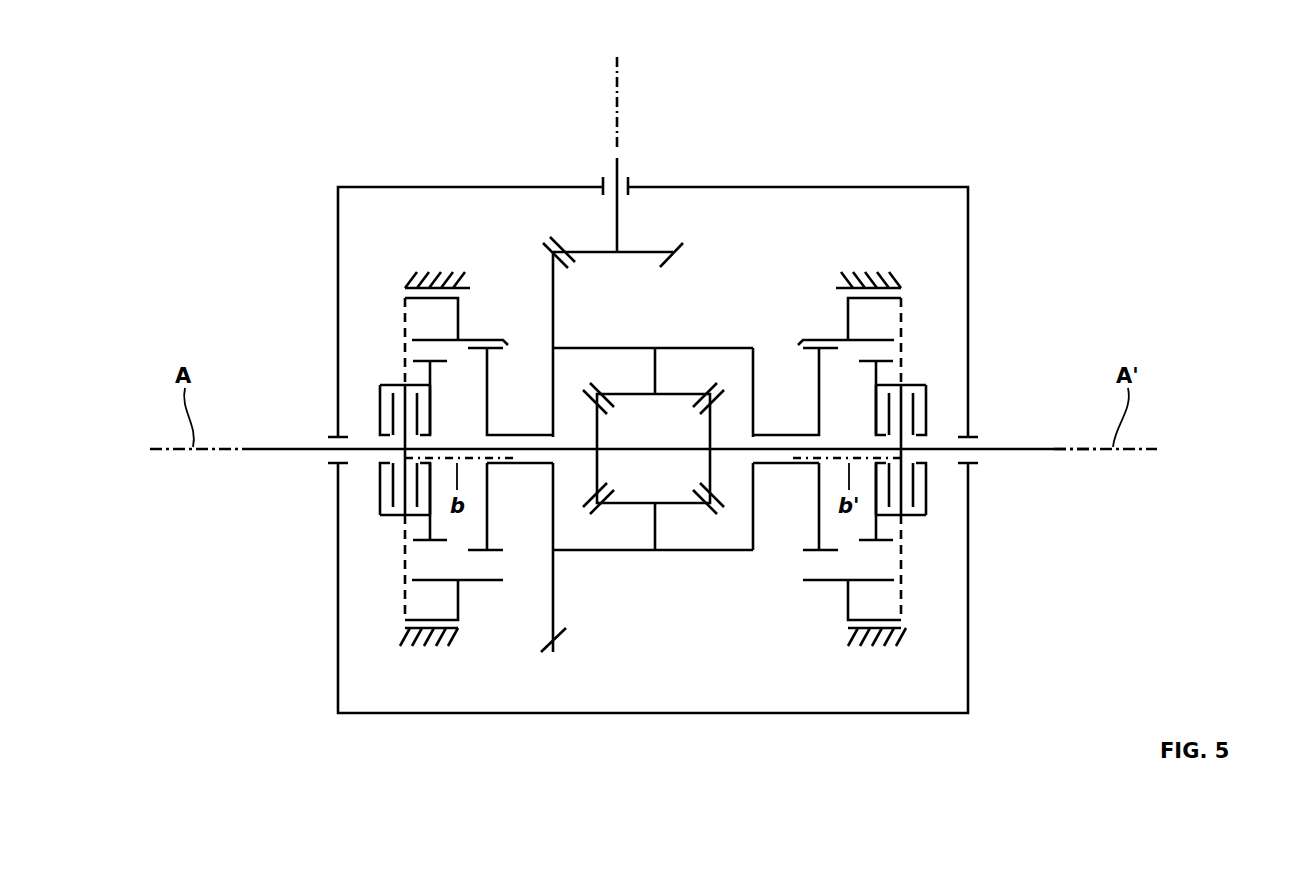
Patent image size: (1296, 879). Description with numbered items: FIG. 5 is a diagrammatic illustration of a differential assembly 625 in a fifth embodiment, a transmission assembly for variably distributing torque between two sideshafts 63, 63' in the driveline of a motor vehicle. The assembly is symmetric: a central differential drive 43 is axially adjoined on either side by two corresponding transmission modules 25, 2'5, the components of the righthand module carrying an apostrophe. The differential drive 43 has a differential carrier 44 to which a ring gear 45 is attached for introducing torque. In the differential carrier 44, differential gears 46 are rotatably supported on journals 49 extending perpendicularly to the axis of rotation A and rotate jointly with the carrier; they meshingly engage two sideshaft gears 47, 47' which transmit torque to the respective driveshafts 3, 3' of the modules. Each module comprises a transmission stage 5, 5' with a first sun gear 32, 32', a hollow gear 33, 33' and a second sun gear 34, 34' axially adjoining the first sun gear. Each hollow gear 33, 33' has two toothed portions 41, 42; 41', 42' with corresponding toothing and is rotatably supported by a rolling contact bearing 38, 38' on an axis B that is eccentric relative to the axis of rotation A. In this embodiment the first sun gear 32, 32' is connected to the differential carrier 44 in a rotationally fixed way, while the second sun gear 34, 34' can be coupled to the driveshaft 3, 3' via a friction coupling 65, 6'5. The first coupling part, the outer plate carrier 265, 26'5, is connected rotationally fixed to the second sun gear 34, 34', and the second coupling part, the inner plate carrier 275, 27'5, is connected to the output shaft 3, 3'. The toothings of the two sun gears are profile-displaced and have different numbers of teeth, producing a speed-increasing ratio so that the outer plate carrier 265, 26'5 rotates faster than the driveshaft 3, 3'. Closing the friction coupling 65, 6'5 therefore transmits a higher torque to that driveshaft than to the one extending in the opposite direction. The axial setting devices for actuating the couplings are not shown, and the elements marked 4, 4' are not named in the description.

The transmission module 25 is at (387, 230).
The transmission module 2'5 is at (908, 443).
The differential assembly 625 is at (762, 147).
The transmission stage 5 is at (452, 299).
The transmission stage 5' is at (856, 299).
The toothed portion 41 is at (503, 294).
The toothed portion 41' is at (804, 294).
The toothed portion 42 is at (381, 330).
The toothed portion 42' is at (929, 330).
The friction coupling 65 is at (341, 440).
The friction coupling 6'5 is at (970, 440).
The inner plate carrier 275 is at (395, 463).
The inner plate carrier 27'5 is at (961, 451).
The outer plate carrier 265 is at (382, 517).
The outer plate carrier 26'5 is at (961, 511).
The driveshaft 3 is at (441, 448).
The driveshaft 3' is at (864, 448).
The gear 4 is at (510, 456).
The gear (mirror) 4' is at (795, 456).
The second sun gear 34 is at (370, 569).
The second sun gear 34' is at (941, 569).
The hollow gear 33 is at (375, 581).
The hollow gear 33' is at (936, 581).
The first sun gear 32 is at (475, 597).
The first sun gear 32' is at (831, 597).
The rolling contact bearing 38 is at (429, 695).
The rolling contact bearing 38' is at (877, 695).
The sideshaft 63 is at (653, 406).
The sideshaft 63' is at (1059, 406).
The ring gear 45 is at (553, 655).
The differential carrier 44 is at (585, 347).
The differential drive 43 is at (665, 576).
The differential gears 46 is at (683, 392).
The sideshaft gear 47 is at (558, 448).
The sideshaft gear 47' is at (756, 448).
The journals 49 is at (656, 372).